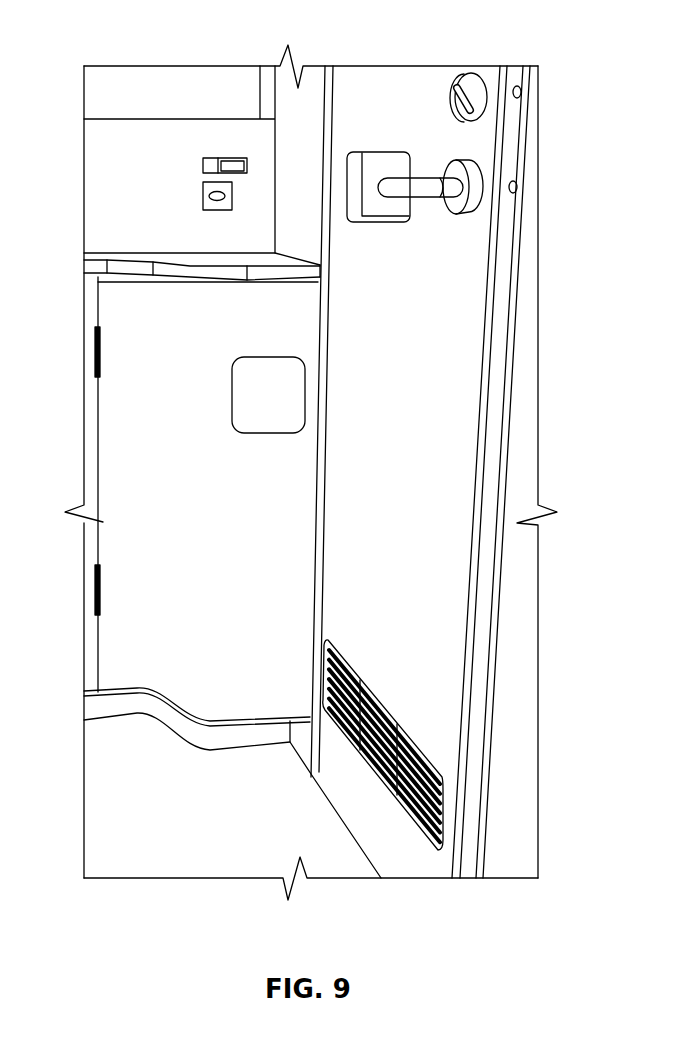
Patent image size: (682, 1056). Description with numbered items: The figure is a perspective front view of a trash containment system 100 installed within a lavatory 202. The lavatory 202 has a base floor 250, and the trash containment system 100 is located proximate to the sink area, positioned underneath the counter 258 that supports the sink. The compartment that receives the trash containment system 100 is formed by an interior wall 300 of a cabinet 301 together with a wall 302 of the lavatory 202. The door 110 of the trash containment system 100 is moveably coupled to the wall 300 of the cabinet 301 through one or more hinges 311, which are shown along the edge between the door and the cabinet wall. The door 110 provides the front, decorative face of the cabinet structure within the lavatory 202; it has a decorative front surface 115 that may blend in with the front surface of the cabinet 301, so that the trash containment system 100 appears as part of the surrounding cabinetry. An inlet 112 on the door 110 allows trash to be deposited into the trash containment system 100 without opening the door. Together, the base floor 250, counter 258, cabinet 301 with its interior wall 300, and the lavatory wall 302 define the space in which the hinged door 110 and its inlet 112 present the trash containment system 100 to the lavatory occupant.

The trash containment system 100 is at (164, 484).
The door 110 is at (128, 618).
The inlet 112 is at (250, 400).
The decorative front surface 115 is at (153, 543).
The lavatory 202 is at (167, 56).
The base floor 250 is at (137, 868).
The counter 258 is at (190, 265).
The interior wall 300 is at (97, 485).
The cabinet 301 is at (95, 468).
The wall 302 is at (296, 104).
The hinge 311 is at (95, 354).